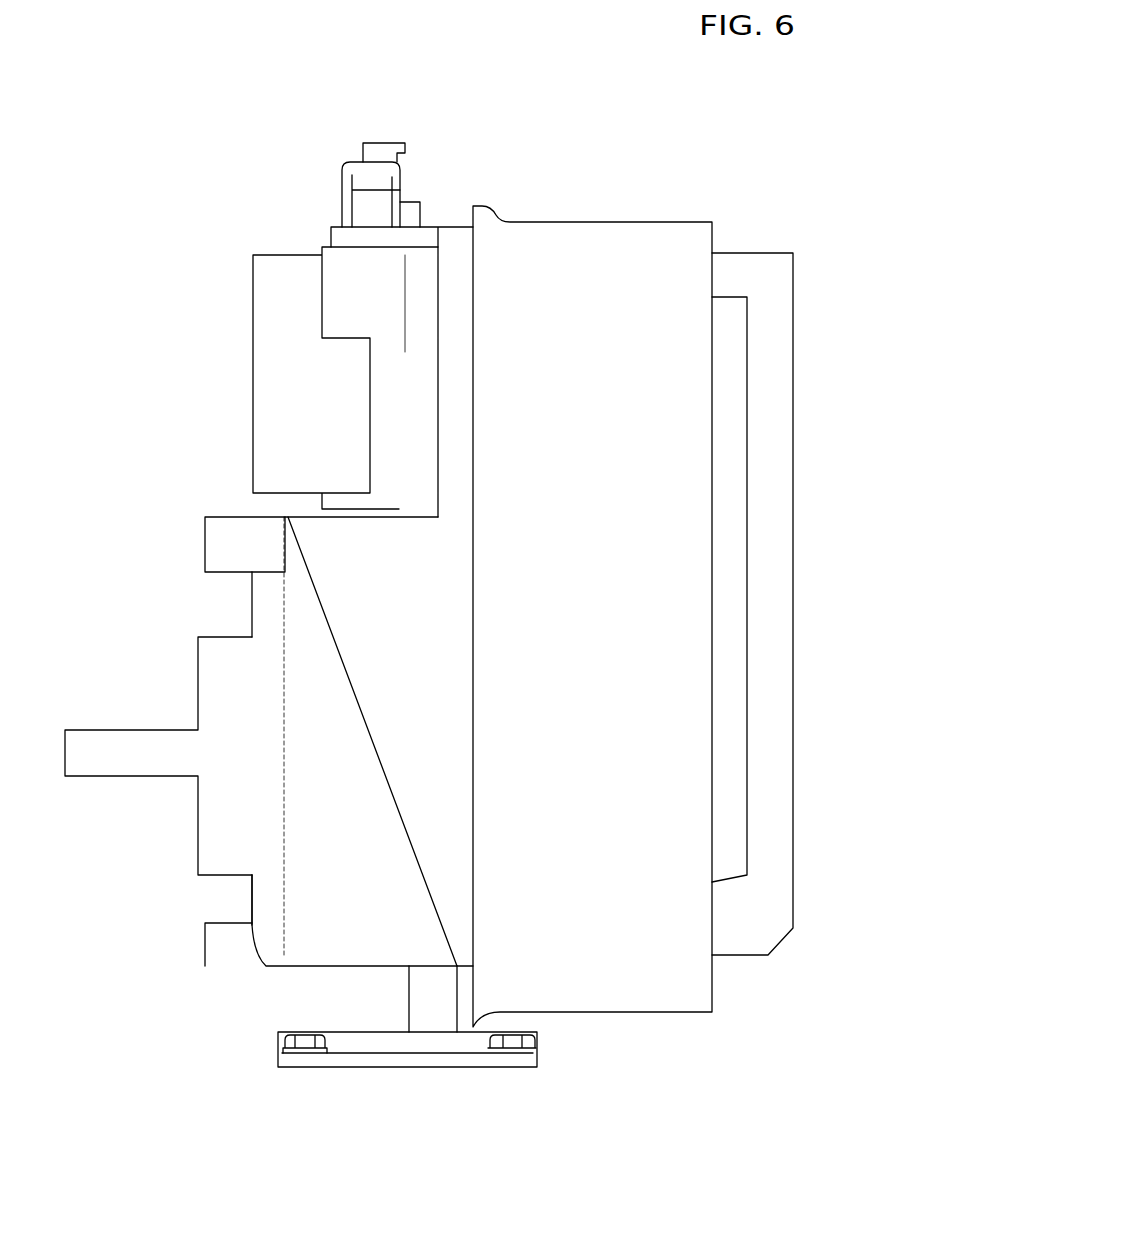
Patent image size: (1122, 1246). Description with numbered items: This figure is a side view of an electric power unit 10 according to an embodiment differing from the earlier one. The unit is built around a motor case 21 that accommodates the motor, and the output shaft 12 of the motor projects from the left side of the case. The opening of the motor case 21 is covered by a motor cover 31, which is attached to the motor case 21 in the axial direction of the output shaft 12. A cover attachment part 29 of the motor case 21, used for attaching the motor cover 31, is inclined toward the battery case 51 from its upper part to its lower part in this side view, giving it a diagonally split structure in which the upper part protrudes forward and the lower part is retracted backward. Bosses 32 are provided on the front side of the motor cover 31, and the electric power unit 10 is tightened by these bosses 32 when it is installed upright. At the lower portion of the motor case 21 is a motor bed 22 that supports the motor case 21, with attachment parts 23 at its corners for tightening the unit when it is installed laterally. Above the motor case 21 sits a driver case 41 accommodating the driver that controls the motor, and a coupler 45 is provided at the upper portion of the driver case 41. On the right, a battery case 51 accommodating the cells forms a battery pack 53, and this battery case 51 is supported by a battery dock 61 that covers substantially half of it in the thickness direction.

The electric power unit 10 is at (207, 107).
The output shaft 12 is at (128, 727).
The motor case 21 is at (372, 588).
The motor bed 22 is at (428, 1068).
The attachment parts 23 is at (540, 1040).
The cover attachment part 29 is at (372, 762).
The motor cover 31 is at (252, 893).
The bosses 32 is at (205, 543).
The driver case 41 is at (253, 358).
The coupler 45 is at (348, 163).
The battery case 51 is at (795, 468).
The battery pack 53 is at (795, 359).
The battery dock 61 is at (625, 222).